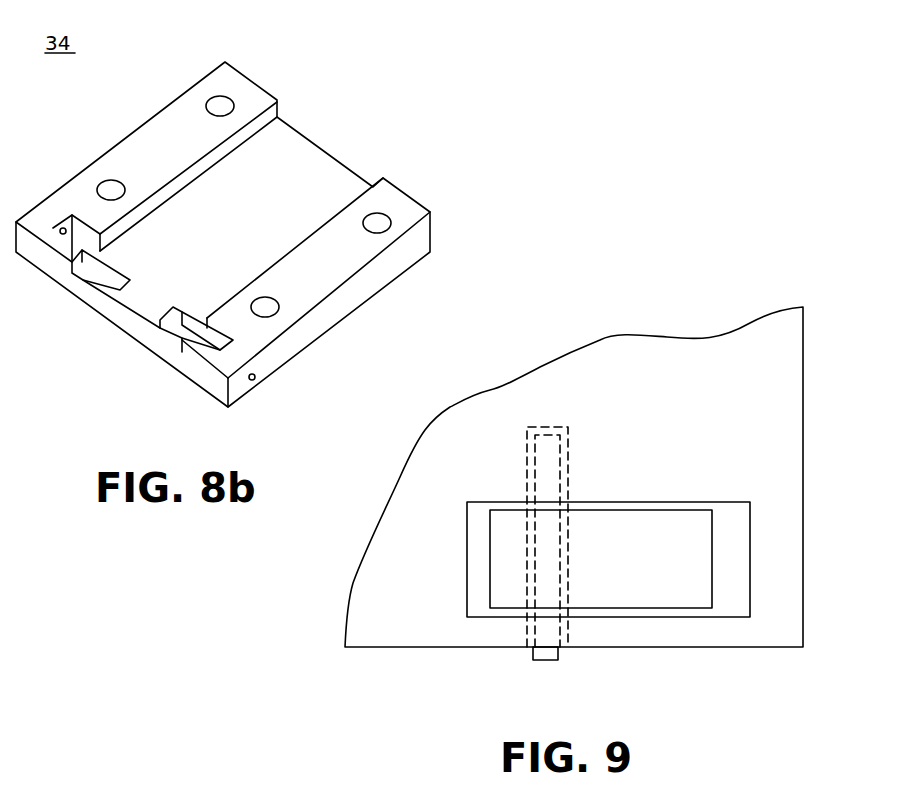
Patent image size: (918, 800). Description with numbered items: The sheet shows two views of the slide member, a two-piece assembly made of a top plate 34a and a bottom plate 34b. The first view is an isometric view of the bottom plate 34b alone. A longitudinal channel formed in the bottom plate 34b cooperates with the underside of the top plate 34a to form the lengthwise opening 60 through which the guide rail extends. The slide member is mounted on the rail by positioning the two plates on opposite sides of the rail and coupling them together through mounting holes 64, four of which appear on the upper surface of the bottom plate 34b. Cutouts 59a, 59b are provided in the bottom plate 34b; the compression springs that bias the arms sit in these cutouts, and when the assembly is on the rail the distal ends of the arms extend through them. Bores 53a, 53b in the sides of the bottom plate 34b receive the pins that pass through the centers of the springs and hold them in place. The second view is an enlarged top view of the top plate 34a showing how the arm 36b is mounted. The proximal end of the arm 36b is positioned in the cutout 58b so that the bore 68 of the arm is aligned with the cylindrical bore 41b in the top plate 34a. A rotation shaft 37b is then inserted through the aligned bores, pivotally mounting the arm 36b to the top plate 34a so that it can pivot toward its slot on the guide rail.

In FIG. 9, the top plate 34a is at (805, 373).
In FIG. 8b, the bottom plate 34b is at (418, 215).
In FIG. 9, the arm 36b is at (690, 597).
In FIG. 9, the rotation shaft 37b is at (550, 661).
In FIG. 9, the cylindrical bore 41b is at (527, 455).
In FIG. 8b, the bore 53a is at (64, 226).
In FIG. 8b, the bore 53b is at (253, 381).
In FIG. 9, the cutout 58b is at (743, 572).
In FIG. 8b, the cutout 59a is at (90, 272).
In FIG. 8b, the cutout 59b is at (173, 333).
In FIG. 8b, the lengthwise opening 60 is at (318, 165).
In FIG. 8b, the mounting hole 64 is at (218, 96).
In FIG. 9, the bore 68 is at (565, 558).